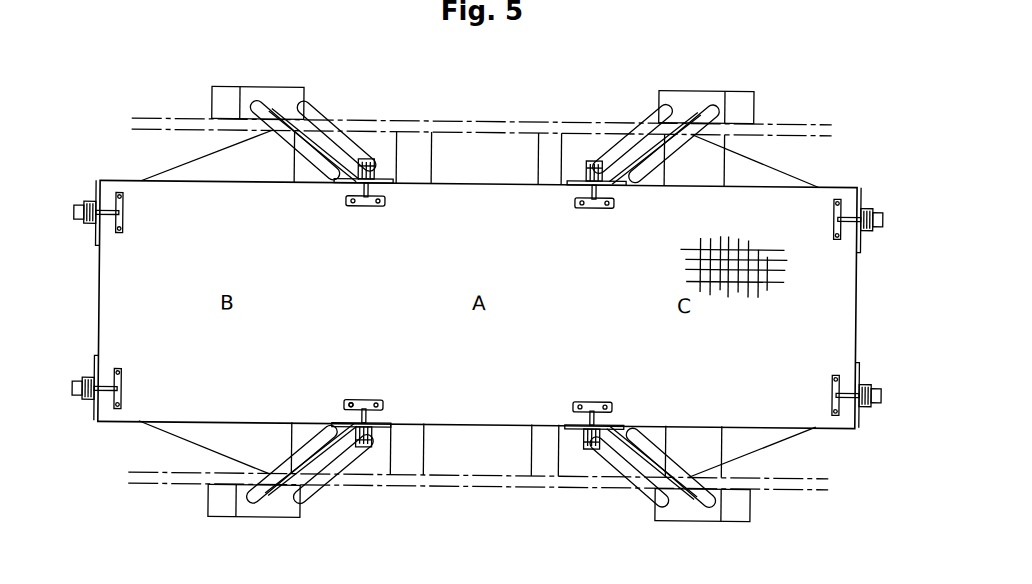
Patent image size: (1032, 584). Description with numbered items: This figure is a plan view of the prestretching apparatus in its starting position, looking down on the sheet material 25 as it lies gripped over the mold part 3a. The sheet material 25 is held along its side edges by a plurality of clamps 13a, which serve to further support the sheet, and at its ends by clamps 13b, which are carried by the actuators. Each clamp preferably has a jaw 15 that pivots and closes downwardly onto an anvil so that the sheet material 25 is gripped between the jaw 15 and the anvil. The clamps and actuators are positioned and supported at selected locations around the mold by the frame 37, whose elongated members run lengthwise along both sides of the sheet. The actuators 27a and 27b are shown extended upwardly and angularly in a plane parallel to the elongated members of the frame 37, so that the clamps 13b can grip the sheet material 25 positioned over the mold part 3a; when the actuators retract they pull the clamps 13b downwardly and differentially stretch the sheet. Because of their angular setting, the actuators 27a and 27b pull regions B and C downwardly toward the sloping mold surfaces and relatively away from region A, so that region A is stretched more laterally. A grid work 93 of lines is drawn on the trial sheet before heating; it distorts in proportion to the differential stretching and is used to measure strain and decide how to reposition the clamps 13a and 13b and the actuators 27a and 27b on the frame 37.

The sheet material 25 is at (840, 302).
The clamps 13a is at (87, 207).
The clamps 13b is at (367, 209).
The jaw 15 is at (344, 401).
The actuator 27a is at (268, 102).
The actuator 27b is at (686, 101).
The mold part 3a is at (770, 164).
The frame 37 is at (818, 121).
The grid work 93 is at (756, 250).